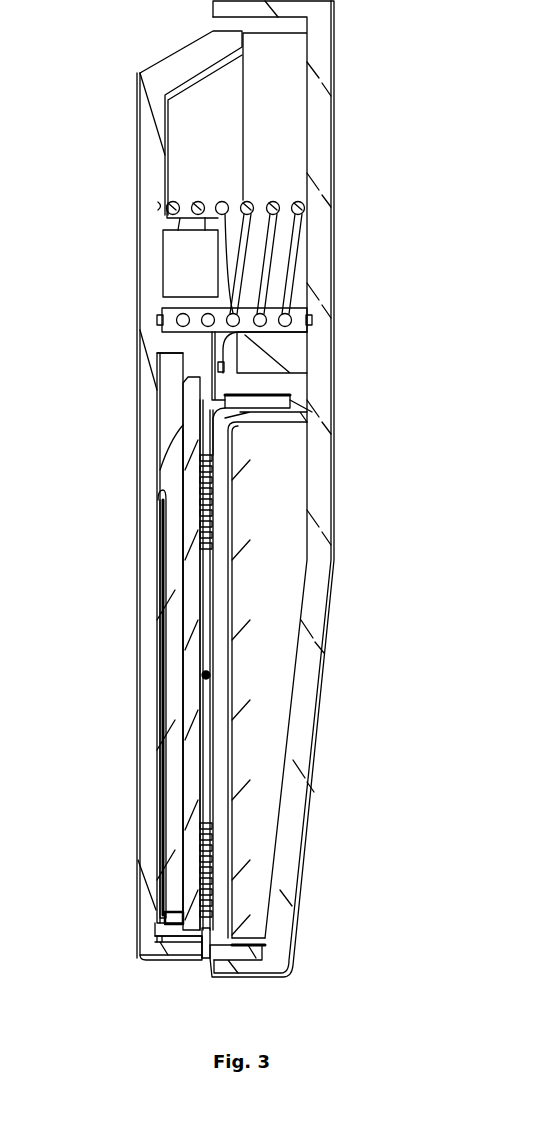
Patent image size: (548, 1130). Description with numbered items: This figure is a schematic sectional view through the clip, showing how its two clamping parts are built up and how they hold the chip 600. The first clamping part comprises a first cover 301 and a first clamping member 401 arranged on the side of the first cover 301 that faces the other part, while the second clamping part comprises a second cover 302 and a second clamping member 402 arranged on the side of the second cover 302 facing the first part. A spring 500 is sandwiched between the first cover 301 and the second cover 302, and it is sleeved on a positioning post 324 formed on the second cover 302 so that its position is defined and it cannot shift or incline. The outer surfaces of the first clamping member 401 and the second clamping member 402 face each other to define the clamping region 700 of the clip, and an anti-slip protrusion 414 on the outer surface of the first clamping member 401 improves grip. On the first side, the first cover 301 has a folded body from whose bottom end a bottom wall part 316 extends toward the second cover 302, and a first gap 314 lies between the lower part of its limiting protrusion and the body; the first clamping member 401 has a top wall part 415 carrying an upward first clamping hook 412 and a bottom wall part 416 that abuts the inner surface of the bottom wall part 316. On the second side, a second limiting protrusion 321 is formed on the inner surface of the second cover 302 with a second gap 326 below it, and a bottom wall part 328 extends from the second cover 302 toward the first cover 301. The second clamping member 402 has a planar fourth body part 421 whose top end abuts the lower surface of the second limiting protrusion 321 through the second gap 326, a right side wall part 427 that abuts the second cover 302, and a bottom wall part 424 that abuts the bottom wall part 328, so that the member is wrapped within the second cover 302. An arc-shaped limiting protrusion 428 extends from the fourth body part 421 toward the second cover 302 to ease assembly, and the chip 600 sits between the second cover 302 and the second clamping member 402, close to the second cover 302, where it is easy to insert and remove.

The first cover 301 is at (315, 110).
The second cover 302 is at (155, 75).
The positioning post 324 is at (178, 262).
The second limiting protrusion 321 is at (190, 347).
The second gap 326 is at (172, 384).
The fourth body part 421 is at (190, 416).
The arc-shaped limiting protrusion 428 is at (162, 467).
The right side wall part 427 is at (175, 528).
The second clamping member 402 is at (185, 572).
The chip 600 is at (162, 676).
The bottom wall part 424 is at (170, 928).
The bottom wall part 328 is at (163, 948).
The bottom wall part 316 is at (232, 963).
The bottom wall part 416 is at (241, 948).
The spring 500 is at (287, 262).
The first gap 314 is at (297, 392).
The first clamping hook 412 is at (292, 399).
The top wall part 415 is at (292, 420).
The anti-slip protrusion 414 is at (215, 520).
The first clamping member 401 is at (218, 600).
The clamping region 700 is at (206, 675).